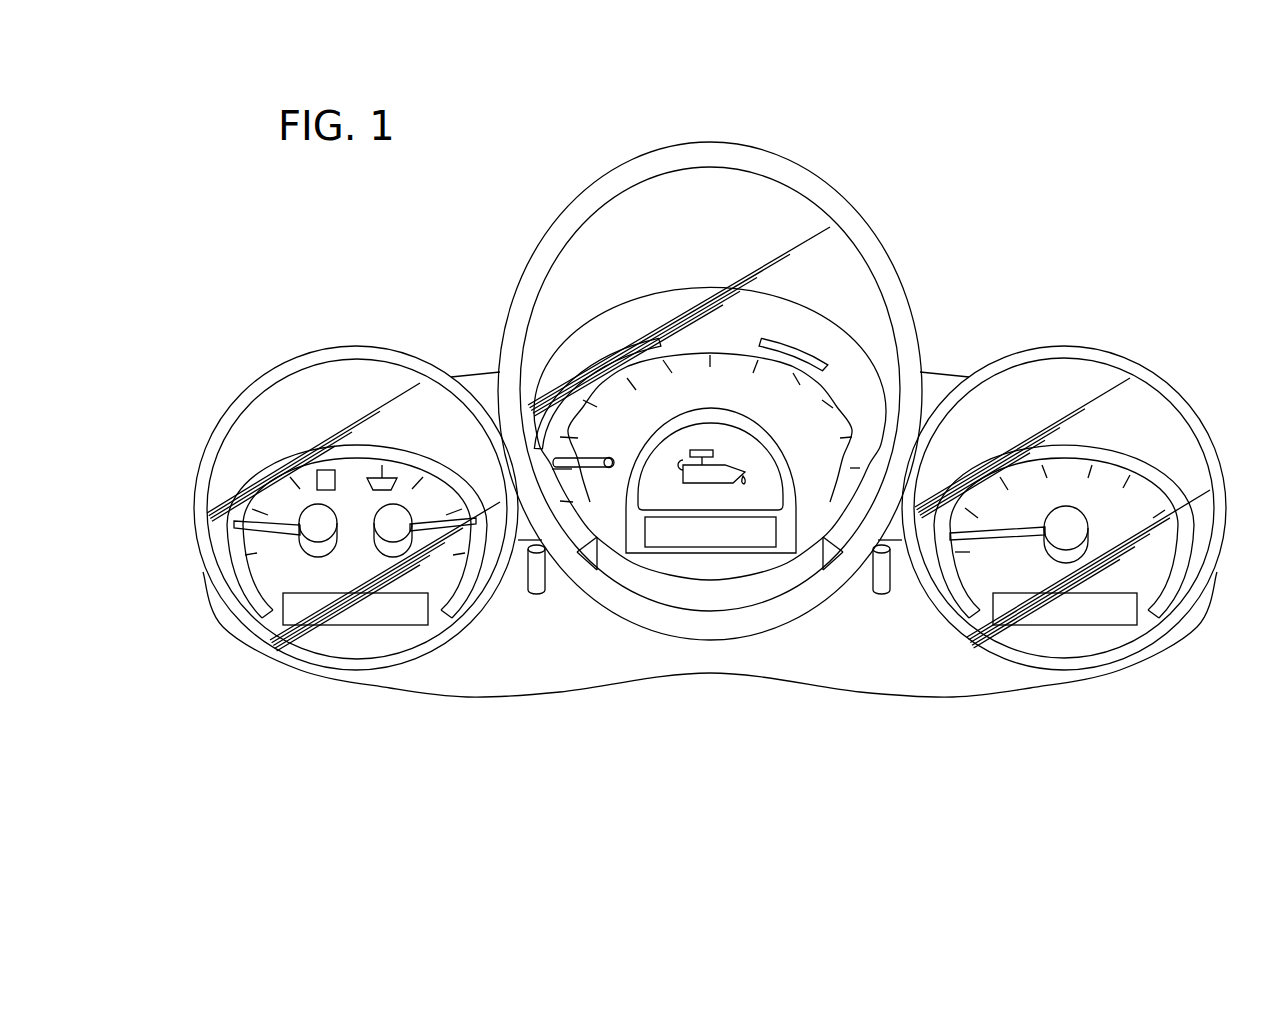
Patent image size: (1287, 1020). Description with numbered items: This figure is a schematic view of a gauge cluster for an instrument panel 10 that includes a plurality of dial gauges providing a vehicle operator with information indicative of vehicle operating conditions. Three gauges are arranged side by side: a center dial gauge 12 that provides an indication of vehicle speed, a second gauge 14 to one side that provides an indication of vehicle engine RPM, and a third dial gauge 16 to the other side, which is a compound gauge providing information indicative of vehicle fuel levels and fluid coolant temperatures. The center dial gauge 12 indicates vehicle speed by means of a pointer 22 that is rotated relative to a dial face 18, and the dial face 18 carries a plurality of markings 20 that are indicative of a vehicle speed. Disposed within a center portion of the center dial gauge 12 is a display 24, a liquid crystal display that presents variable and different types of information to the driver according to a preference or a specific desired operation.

The instrument panel 10 is at (710, 409).
The center dial gauge 12 is at (838, 346).
The second gauge 14 is at (1142, 424).
The third dial gauge 16 is at (305, 404).
The dial face 18 is at (720, 366).
The markings 20 is at (685, 368).
The pointer 22 is at (582, 458).
The display 24 is at (790, 518).